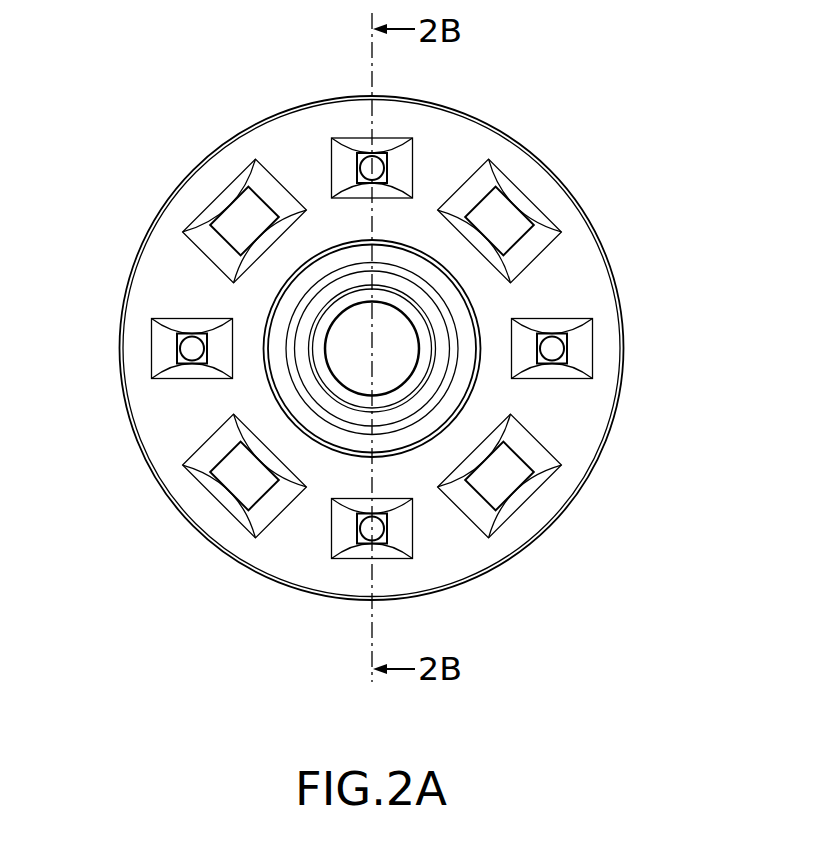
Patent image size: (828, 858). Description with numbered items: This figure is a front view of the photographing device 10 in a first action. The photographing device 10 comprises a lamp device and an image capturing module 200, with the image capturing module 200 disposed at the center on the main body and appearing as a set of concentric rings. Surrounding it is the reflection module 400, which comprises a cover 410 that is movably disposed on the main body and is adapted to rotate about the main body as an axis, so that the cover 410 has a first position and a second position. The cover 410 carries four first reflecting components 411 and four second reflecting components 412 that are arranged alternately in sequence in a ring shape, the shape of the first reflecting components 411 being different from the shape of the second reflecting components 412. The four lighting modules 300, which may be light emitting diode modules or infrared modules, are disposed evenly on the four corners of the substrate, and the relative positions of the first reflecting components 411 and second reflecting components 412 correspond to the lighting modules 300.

The photographing device 10 is at (103, 98).
The image capturing module 200 is at (340, 368).
The lighting modules 300 is at (374, 168).
The reflection module 400 is at (546, 149).
The cover 410 is at (180, 469).
The first reflecting components 411 is at (328, 134).
The second reflecting components 412 is at (494, 162).